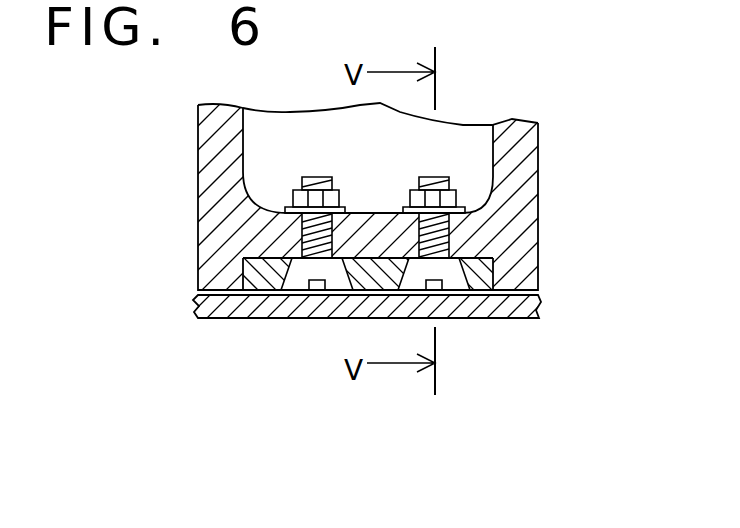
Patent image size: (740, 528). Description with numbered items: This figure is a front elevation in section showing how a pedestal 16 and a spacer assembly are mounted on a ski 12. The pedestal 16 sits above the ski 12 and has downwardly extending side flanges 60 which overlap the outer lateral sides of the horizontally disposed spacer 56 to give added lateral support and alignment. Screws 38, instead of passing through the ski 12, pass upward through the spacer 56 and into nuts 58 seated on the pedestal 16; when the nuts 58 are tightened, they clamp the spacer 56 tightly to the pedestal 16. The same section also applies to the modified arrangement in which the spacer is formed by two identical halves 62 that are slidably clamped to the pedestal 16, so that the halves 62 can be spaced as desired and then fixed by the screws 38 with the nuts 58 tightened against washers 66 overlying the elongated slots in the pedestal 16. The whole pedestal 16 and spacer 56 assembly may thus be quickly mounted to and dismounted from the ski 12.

The ski 12 is at (508, 318).
The pedestal 16 is at (308, 108).
The screws 38 is at (333, 292).
The spacer 56 is at (330, 335).
The nuts 58 is at (318, 177).
The side flanges 60 is at (218, 258).
The halves 62 is at (258, 282).
The washers 66 is at (285, 208).